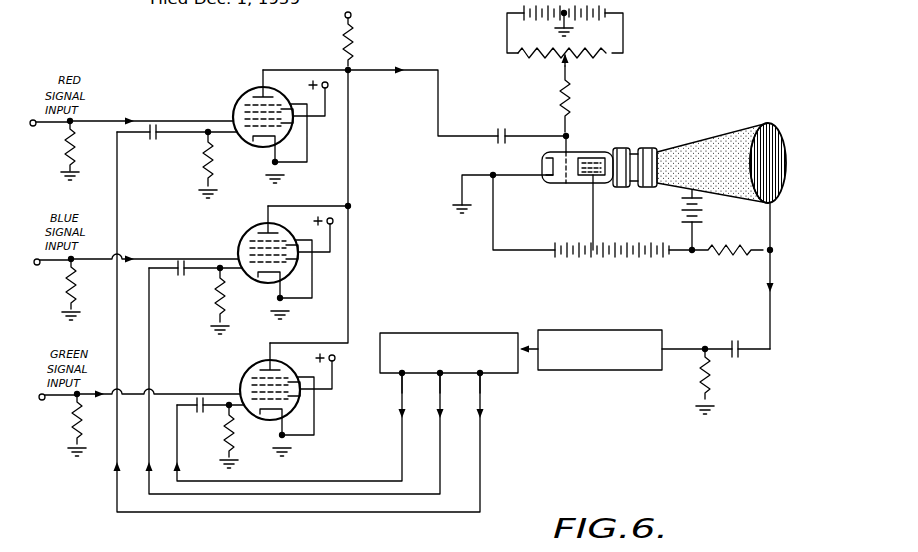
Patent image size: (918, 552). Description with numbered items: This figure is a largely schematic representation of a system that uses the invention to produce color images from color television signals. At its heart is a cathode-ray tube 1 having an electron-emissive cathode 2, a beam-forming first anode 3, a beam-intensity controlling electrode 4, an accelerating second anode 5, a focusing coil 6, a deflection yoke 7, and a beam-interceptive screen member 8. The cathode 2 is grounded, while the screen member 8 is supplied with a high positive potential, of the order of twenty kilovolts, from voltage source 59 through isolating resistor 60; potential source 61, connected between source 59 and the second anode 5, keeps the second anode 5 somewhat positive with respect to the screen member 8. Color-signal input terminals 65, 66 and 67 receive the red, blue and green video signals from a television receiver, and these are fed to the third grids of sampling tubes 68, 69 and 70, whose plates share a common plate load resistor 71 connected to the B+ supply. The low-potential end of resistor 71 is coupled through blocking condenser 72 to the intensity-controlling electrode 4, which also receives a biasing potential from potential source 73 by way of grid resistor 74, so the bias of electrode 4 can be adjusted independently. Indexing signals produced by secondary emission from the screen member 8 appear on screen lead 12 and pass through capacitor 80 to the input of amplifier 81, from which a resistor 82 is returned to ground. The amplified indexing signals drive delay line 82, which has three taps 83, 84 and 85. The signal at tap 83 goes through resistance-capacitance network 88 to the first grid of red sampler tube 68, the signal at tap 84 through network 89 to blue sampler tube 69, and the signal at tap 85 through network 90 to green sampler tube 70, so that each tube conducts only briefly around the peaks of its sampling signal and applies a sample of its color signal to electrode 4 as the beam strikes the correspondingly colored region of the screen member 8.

The cathode-ray tube 1 is at (605, 150).
The cathode 2 is at (544, 162).
The first anode 3 is at (586, 178).
The intensity-controlling electrode 4 is at (570, 156).
The second anode 5 is at (722, 134).
The focusing coil 6 is at (623, 188).
The deflection yoke 7 is at (648, 188).
The screen member 8 is at (763, 128).
The screen lead 12 is at (773, 222).
The voltage source 59 is at (601, 282).
The isolating resistor 60 is at (728, 257).
The potential source 61 is at (706, 208).
The color-signal input terminal 65 is at (33, 127).
The color-signal input terminal 66 is at (37, 266).
The color-signal input terminal 67 is at (42, 401).
The sampling tube 68 is at (252, 90).
The sampling tube 69 is at (249, 232).
The sampling tube 70 is at (243, 375).
The plate load resistor 71 is at (352, 52).
The blocking condenser 72 is at (503, 131).
The potential source 73 is at (656, 39).
The grid resistor 74 is at (572, 106).
The capacitor 80 is at (740, 339).
The amplifier 81 is at (622, 330).
The delay line 82 is at (475, 333).
The tap 83 is at (481, 374).
The tap 84 is at (441, 374).
The tap 85 is at (403, 374).
The resistance-capacitance network 88 is at (194, 173).
The resistance-capacitance network 89 is at (199, 315).
The resistance-capacitance network 90 is at (218, 440).